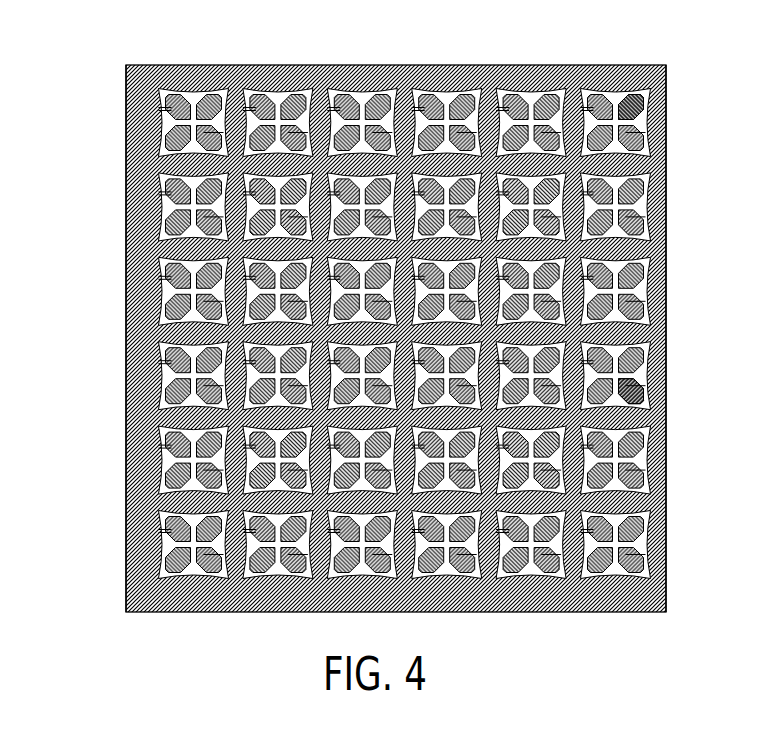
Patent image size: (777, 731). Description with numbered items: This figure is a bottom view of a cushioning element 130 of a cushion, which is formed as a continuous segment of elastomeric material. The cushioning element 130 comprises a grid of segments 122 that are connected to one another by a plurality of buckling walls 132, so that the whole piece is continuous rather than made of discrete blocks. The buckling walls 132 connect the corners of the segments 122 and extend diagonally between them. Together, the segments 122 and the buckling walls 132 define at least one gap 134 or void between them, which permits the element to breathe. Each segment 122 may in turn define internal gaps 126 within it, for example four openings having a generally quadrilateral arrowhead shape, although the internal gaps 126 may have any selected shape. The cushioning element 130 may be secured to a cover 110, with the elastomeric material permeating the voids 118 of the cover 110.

The cover 110 is at (665, 580).
The voids of the cover 118 is at (663, 497).
The segments 122 is at (664, 205).
The internal gaps 126 is at (657, 174).
The cushioning element 130 is at (371, 290).
The buckling walls 132 is at (591, 92).
The gap 134 is at (156, 312).